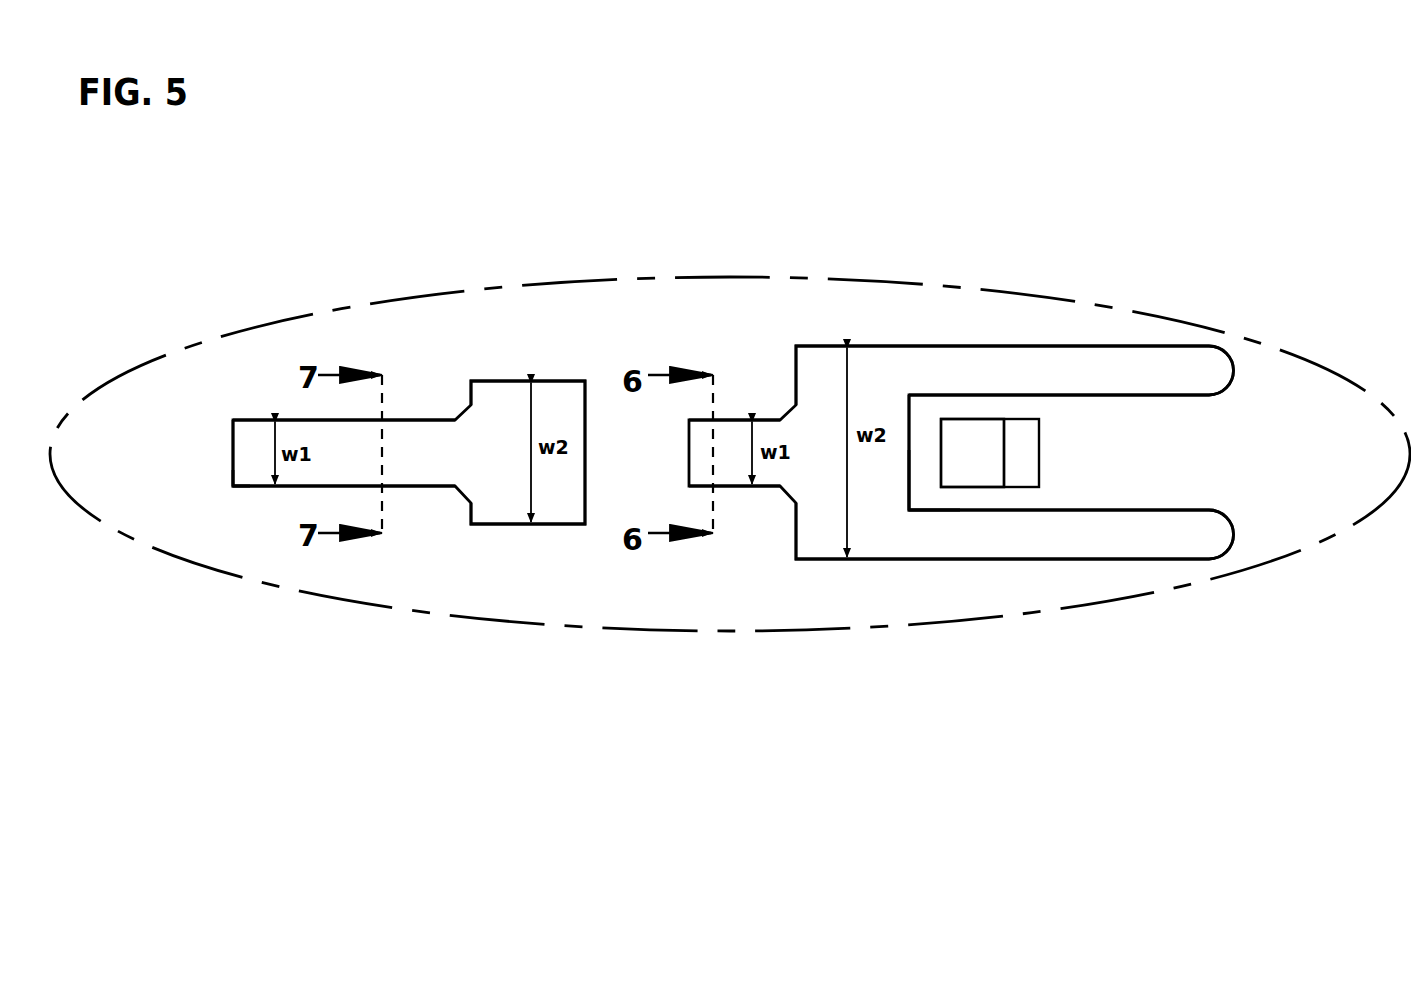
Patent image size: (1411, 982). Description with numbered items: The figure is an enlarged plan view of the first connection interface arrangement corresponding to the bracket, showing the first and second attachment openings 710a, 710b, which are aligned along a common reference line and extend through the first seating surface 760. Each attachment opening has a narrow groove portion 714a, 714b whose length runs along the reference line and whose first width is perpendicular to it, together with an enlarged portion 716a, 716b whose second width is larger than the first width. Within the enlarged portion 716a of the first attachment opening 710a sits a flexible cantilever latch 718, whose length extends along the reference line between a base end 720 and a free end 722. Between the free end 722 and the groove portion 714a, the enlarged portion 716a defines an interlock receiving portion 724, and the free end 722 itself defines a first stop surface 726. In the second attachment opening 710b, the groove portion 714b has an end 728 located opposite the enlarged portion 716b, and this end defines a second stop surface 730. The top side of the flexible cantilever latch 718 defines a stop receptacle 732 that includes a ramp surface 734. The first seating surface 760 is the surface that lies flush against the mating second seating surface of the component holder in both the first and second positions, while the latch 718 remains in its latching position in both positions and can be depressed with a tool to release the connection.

The first attachment opening 710a is at (957, 340).
The second attachment opening 710b is at (496, 378).
The groove portion of the first attachment opening 714a is at (735, 418).
The groove portion of the second attachment opening 714b is at (308, 417).
The enlarged portion of the first attachment opening 716a is at (1113, 560).
The enlarged portion of the second attachment opening 716b is at (492, 526).
The flexible cantilever latch 718 is at (1179, 420).
The base end 720 is at (1255, 465).
The free end 722 is at (907, 510).
The interlock receiving portion 724 is at (820, 412).
The first stop surface 726 is at (906, 462).
The end of the groove portion 728 is at (233, 441).
The second stop surface 730 is at (237, 468).
The stop receptacle 732 is at (1027, 450).
The ramp surface 734 is at (975, 460).
The first seating surface 760 is at (612, 467).